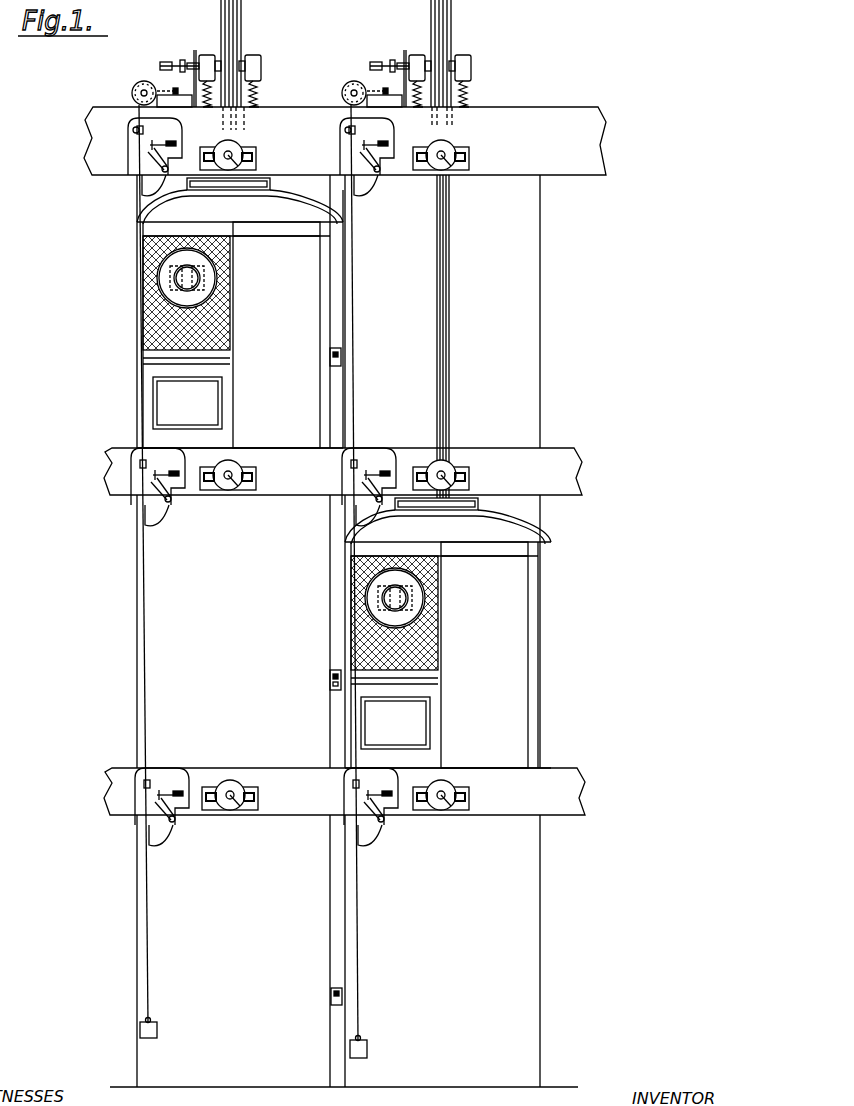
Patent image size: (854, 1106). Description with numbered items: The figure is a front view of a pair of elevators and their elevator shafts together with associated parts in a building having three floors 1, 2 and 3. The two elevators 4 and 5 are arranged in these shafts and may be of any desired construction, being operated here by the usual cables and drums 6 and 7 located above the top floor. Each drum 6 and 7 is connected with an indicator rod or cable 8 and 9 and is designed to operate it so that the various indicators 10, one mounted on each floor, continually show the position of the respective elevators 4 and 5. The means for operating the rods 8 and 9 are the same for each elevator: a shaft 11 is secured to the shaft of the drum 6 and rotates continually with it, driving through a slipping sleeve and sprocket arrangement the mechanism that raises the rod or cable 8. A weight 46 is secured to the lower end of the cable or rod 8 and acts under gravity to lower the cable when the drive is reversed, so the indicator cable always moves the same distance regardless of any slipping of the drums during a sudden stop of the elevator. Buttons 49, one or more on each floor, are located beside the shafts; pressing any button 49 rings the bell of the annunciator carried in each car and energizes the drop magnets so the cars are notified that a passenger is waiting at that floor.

The floor 1 is at (520, 1087).
The floor 2 is at (574, 778).
The floor 3 is at (574, 458).
The elevator 4 is at (522, 658).
The elevator 5 is at (313, 405).
The drum 6 is at (430, 10).
The drum 7 is at (242, 24).
The indicator rod or cable 8 is at (356, 302).
The indicator rod or cable 9 is at (147, 571).
The indicator 10 is at (451, 467).
The shaft 11 is at (301, 75).
The weight 46 is at (368, 1052).
The button 49 is at (330, 359).